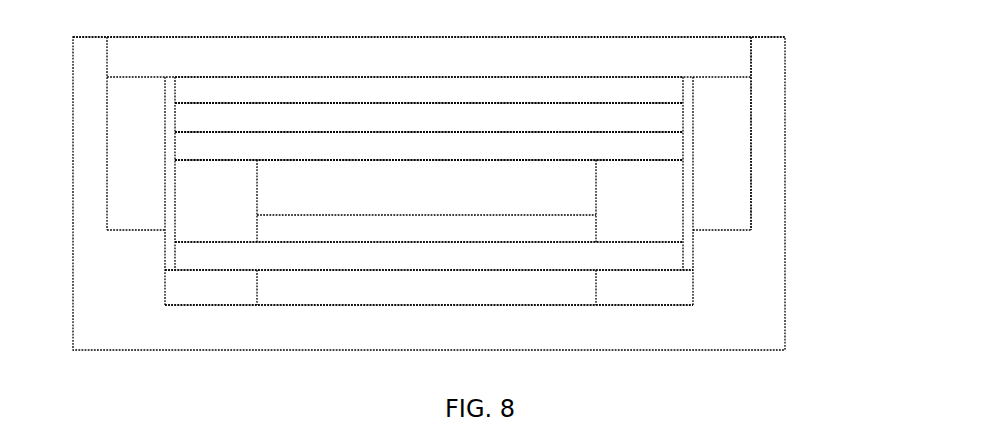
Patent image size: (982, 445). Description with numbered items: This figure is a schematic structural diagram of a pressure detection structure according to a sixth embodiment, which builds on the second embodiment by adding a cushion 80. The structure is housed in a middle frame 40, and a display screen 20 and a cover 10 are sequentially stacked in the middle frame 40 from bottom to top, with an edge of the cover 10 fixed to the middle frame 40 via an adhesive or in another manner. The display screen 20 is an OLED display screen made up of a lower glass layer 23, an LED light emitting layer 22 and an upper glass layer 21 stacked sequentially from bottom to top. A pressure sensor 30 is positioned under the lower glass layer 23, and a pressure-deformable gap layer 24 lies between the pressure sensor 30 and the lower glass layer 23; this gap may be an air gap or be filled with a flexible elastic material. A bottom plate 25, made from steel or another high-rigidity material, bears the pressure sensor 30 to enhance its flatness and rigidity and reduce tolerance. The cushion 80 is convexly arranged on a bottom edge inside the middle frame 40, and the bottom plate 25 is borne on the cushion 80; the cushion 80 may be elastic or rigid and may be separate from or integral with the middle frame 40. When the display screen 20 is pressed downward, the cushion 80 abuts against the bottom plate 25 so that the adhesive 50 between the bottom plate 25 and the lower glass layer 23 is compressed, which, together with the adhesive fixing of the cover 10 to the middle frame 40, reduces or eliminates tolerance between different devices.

The cover 10 is at (733, 59).
The display screen 20 is at (860, 143).
The upper glass layer 21 is at (673, 87).
The LED light emitting layer 22 is at (671, 118).
The lower glass layer 23 is at (671, 146).
The gap layer 24 is at (578, 176).
The bottom plate 25 is at (665, 263).
The pressure sensor 30 is at (580, 235).
The middle frame 40 is at (765, 328).
The adhesive 50 is at (640, 207).
The cushion 80 is at (665, 293).